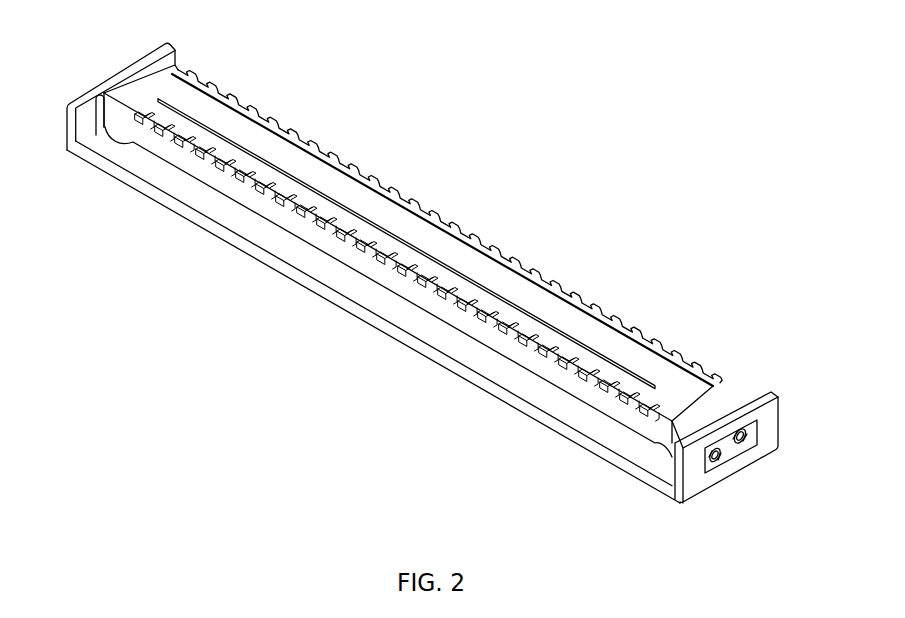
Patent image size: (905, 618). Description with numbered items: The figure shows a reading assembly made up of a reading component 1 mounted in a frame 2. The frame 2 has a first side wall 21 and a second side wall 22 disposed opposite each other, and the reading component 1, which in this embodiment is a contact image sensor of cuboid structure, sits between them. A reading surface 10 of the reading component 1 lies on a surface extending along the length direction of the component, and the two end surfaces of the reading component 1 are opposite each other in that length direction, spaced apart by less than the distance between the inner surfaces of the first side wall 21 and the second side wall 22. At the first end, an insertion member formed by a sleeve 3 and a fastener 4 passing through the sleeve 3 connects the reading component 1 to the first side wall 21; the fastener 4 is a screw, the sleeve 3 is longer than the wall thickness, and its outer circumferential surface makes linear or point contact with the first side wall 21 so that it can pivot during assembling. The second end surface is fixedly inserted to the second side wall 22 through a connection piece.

The reading component 1 is at (287, 84).
The frame 2 is at (292, 293).
The reading surface 10 is at (448, 247).
The first side wall 21 is at (772, 424).
The second side wall 22 is at (85, 117).
The sleeve 3 is at (729, 450).
The fastener 4 is at (742, 438).